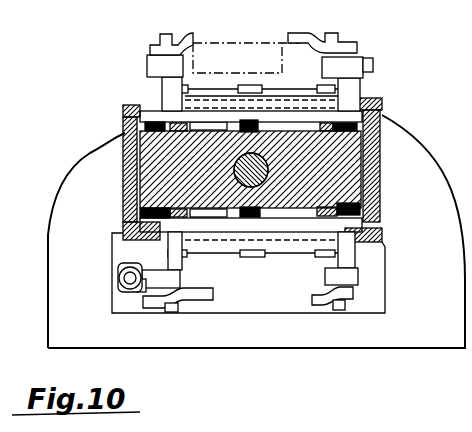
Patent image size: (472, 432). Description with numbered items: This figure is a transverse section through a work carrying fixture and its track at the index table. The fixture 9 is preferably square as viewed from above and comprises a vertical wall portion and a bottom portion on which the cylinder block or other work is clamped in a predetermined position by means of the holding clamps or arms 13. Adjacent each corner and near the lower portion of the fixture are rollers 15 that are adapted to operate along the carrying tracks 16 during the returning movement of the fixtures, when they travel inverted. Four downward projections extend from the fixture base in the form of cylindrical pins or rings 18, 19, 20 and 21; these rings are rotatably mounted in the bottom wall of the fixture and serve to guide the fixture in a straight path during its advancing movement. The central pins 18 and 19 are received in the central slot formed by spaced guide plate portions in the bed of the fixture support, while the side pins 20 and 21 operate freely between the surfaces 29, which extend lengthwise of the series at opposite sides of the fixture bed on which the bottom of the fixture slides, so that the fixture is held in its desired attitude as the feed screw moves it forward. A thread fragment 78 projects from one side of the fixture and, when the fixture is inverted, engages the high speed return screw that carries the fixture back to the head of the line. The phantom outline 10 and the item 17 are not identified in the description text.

The work carrying fixture 9 is at (362, 60).
The stator frame 10 is at (249, 42).
The holding clamps or arms 13 is at (180, 42).
The rollers 15 is at (150, 104).
The carrying tracks 16 is at (384, 244).
The pivot pin 17 is at (127, 281).
The cylindrical pin or ring 18 is at (257, 114).
The cylindrical pin or ring 19 is at (250, 216).
The side pin or ring 20 is at (145, 127).
The side pin or ring 21 is at (383, 126).
The surfaces 29 is at (382, 114).
The thread fragment 78 is at (374, 65).